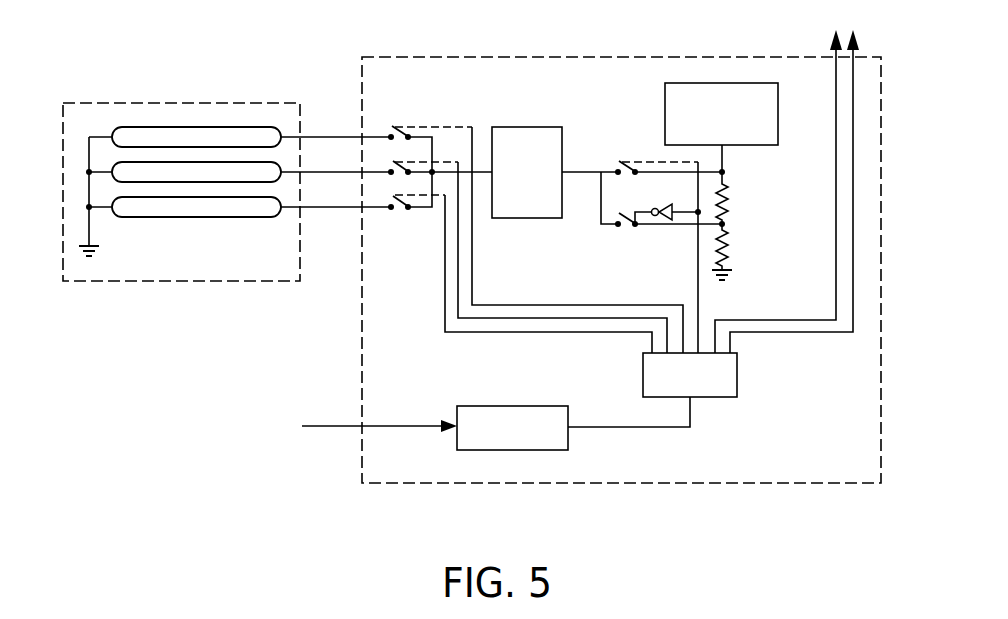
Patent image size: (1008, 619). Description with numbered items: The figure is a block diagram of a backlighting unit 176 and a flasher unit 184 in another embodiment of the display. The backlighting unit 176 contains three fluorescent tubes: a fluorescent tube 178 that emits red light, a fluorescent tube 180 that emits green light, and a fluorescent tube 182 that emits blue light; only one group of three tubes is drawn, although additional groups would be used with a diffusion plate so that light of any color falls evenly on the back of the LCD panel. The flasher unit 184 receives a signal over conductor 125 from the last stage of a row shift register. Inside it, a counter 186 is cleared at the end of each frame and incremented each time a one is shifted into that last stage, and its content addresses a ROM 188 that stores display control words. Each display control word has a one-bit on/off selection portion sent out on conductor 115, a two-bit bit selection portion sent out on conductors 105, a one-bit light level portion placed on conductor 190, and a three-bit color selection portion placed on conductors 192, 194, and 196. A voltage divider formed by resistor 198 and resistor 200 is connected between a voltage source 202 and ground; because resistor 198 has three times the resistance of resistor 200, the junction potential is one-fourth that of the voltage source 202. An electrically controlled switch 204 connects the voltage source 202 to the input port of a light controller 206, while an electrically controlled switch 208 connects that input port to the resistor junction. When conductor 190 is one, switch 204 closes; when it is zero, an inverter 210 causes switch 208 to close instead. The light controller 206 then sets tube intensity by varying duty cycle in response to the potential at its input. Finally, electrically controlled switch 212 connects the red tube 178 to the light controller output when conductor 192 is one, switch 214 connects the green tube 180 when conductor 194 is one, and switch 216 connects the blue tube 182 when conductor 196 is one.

The conductors 105 is at (833, 62).
The conductor 115 is at (856, 60).
The conductor 125 is at (328, 425).
The backlighting unit 176 is at (92, 282).
The fluorescent tube 178 is at (160, 130).
The fluorescent tube 180 is at (284, 170).
The fluorescent tube 182 is at (162, 217).
The flasher unit 184 is at (435, 486).
The counter 186 is at (532, 406).
The ROM 188 is at (737, 372).
The conductor 190 is at (698, 245).
The conductor 192 is at (473, 262).
The conductor 194 is at (490, 318).
The conductor 196 is at (462, 333).
The resistor 198 is at (731, 195).
The resistor 200 is at (729, 250).
The voltage source 202 is at (665, 104).
The electrically controlled switch 204 is at (611, 149).
The light controller 206 is at (543, 127).
The electrically controlled switch 208 is at (610, 235).
The inverter 210 is at (654, 208).
The electrically controlled switch 212 is at (403, 116).
The electrically controlled switch 214 is at (390, 183).
The electrically controlled switch 216 is at (397, 222).